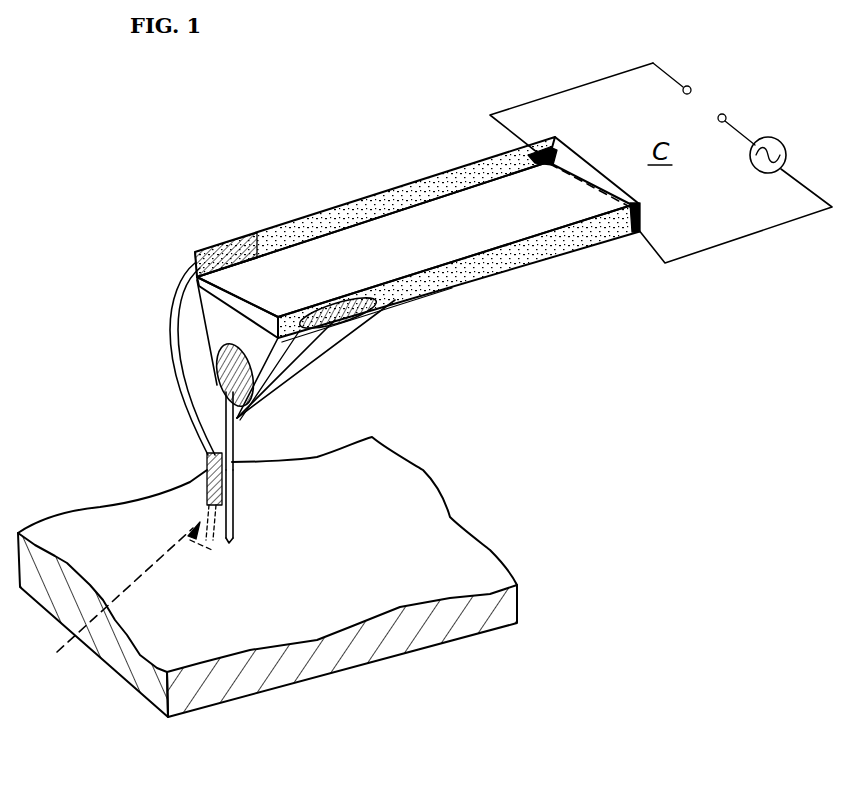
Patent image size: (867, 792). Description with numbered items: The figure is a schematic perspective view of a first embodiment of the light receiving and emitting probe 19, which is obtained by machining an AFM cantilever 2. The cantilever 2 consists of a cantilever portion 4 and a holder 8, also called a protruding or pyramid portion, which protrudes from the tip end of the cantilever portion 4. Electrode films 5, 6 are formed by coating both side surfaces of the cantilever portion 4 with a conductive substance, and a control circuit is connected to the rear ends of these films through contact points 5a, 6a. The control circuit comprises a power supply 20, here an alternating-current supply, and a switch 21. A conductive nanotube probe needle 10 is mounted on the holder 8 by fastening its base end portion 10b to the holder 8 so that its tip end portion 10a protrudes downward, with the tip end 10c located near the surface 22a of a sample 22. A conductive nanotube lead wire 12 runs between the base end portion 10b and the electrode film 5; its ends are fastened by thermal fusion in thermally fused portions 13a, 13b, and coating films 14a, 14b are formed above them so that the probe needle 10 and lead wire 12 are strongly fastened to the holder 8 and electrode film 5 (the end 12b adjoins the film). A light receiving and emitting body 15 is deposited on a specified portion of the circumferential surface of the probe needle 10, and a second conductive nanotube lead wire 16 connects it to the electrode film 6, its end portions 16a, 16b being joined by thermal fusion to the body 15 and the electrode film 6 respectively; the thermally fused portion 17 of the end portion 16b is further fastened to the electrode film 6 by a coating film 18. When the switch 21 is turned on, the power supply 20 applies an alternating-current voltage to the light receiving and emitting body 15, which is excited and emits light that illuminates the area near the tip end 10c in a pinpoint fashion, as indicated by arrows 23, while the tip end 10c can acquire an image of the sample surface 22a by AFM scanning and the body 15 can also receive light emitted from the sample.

The AFM cantilever 2 is at (417, 229).
The cantilever portion 4 is at (517, 225).
The electrode film 5 is at (587, 243).
The contact point 5a is at (615, 228).
The electrode film 6 is at (457, 182).
The contact point 6a is at (530, 158).
The holder 8 is at (300, 357).
The conductive nanotube probe needle 10 is at (279, 479).
The tip end portion 10a is at (228, 513).
The base end portion 10b is at (237, 418).
The tip end 10c is at (228, 536).
The conductive nanotube lead wire 12 is at (300, 345).
The support wire end 12b is at (395, 312).
The thermally fused portion 13a is at (215, 360).
The thermally fused portion 13b is at (410, 302).
The coating film 14a is at (290, 376).
The coating film 14b is at (450, 286).
The light receiving and emitting body 15 is at (205, 468).
The conductive nanotube lead wire 16 is at (173, 307).
The end portion 16a is at (207, 487).
The end portion 16b is at (212, 248).
The thermally fused portion 17 is at (233, 243).
The coating film 18 is at (253, 240).
The light receiving and emitting probe 19 is at (372, 147).
The power supply 20 is at (782, 140).
The switch 21 is at (710, 103).
The sample 22 is at (267, 595).
The sample surface 22a is at (267, 622).
The arrows 23 is at (117, 601).